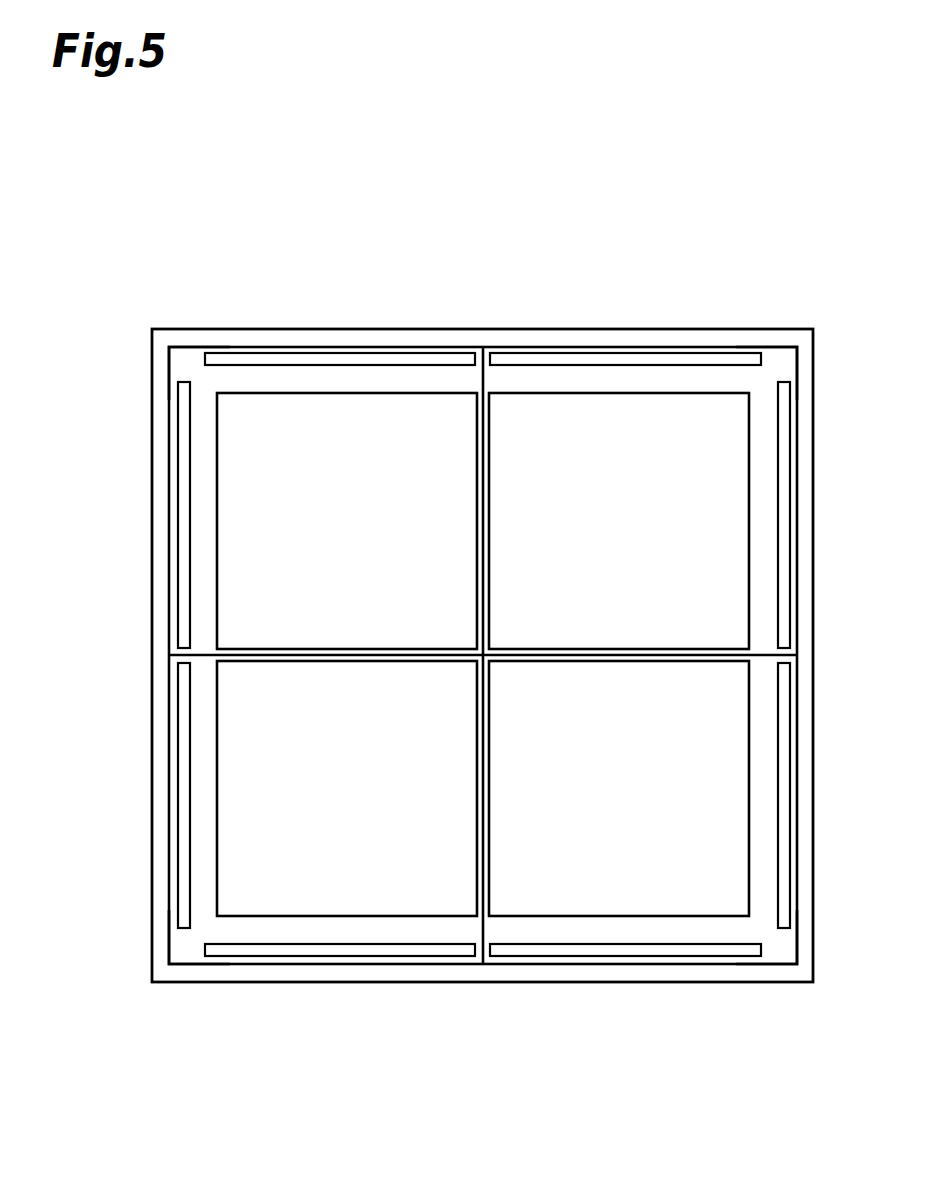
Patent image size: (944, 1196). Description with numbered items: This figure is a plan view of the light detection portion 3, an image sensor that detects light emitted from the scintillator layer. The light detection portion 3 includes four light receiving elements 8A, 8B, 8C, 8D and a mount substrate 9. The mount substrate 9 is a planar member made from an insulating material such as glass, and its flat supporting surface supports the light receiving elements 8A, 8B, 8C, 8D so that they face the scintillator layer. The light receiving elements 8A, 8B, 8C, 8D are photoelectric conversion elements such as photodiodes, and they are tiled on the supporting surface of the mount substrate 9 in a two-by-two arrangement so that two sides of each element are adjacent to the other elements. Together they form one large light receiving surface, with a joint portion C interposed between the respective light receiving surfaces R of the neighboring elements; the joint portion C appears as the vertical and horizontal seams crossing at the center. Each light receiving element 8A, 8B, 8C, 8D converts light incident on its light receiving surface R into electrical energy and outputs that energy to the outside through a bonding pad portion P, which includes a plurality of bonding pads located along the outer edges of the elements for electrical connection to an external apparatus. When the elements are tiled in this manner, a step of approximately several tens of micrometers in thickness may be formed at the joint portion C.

The light detection portion 3 is at (195, 222).
The mount substrate 9 is at (307, 329).
The light receiving element 8A is at (187, 365).
The light receiving element 8B is at (778, 363).
The light receiving element 8C is at (187, 943).
The light receiving element 8D is at (778, 942).
The bonding pad portion P is at (528, 358).
The light receiving surface R is at (242, 512).
The joint portion C is at (485, 592).